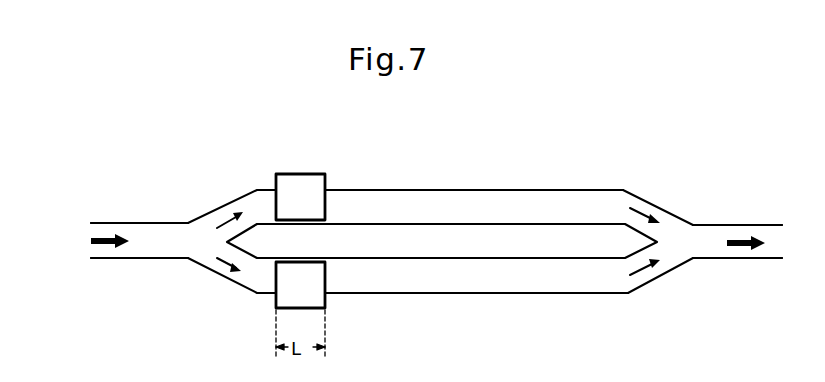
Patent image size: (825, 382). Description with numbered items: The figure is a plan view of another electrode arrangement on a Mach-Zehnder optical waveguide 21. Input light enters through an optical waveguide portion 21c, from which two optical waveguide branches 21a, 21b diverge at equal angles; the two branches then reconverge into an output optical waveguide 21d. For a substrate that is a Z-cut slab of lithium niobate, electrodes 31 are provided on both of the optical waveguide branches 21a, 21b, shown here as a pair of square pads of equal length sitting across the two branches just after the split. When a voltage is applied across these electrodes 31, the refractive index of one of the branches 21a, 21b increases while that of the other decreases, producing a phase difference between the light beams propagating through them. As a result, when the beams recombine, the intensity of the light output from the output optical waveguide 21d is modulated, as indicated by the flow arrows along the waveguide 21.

The Mach-Zehnder optical waveguide 21 is at (587, 148).
The optical waveguide branch 21a is at (503, 195).
The optical waveguide branch 21b is at (515, 288).
The optical waveguide portion for input light 21c is at (162, 252).
The output optical waveguide 21d is at (773, 253).
The electrodes 31 is at (317, 267).